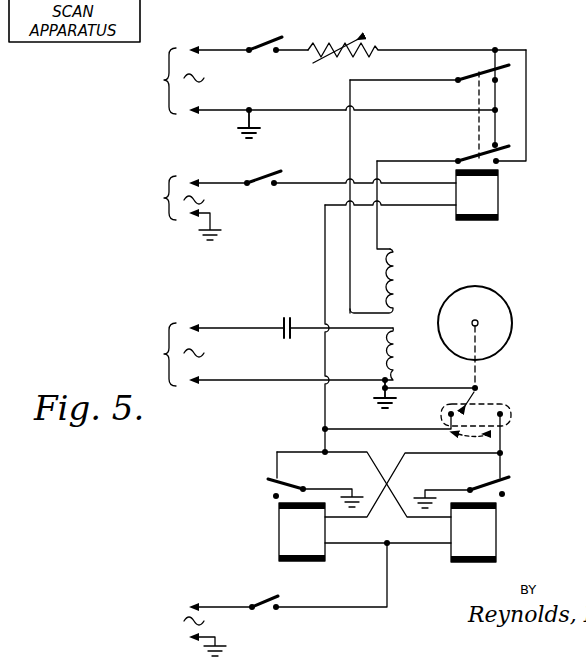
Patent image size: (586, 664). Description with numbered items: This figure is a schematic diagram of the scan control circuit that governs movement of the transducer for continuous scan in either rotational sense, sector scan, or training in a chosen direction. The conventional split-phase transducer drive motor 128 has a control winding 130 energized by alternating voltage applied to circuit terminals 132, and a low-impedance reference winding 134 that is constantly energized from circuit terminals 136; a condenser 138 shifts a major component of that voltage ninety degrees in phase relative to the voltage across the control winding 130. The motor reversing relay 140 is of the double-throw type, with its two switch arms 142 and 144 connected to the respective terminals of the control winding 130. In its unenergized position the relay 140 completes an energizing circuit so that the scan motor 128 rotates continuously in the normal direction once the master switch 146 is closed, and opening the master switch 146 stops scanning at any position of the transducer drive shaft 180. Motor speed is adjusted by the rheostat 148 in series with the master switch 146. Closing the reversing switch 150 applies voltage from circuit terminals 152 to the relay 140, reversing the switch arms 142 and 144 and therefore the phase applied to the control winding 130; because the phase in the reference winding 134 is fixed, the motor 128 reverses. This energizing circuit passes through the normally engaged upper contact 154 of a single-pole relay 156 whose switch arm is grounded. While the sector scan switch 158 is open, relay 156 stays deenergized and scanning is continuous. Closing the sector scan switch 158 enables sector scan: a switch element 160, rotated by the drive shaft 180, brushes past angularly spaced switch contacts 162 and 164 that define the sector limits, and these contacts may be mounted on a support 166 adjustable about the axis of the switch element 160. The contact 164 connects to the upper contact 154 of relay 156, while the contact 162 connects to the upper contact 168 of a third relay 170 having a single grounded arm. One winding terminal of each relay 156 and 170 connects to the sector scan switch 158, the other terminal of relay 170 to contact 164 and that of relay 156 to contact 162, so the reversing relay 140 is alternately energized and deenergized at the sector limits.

The transducer drive motor 128 is at (504, 296).
The control winding 130 is at (404, 283).
The circuit terminals 132 is at (235, 81).
The reference winding 134 is at (400, 362).
The circuit terminals 136 is at (256, 354).
The condenser 138 is at (287, 318).
The motor reversing relay 140 is at (498, 202).
The switch arm 142 is at (465, 78).
The switch arm 144 is at (461, 157).
The master switch 146 is at (268, 43).
The rheostat 148 is at (336, 47).
The reversing switch 150 is at (259, 181).
The circuit terminals 152 is at (183, 208).
The upper contact 154 is at (276, 480).
The single-pole relay 156 is at (279, 530).
The sector scan switch 158 is at (263, 600).
The switch element 160 is at (479, 393).
The switch contact 162 is at (502, 420).
The switch contact 164 is at (449, 414).
The support 166 is at (508, 418).
The upper contact 168 is at (505, 478).
The third relay 170 is at (497, 520).
The transducer drive shaft 180 is at (478, 380).